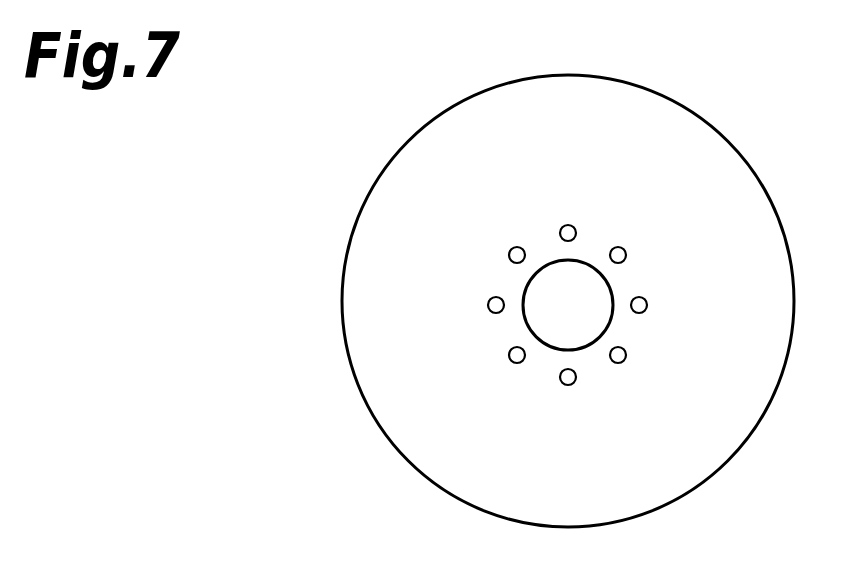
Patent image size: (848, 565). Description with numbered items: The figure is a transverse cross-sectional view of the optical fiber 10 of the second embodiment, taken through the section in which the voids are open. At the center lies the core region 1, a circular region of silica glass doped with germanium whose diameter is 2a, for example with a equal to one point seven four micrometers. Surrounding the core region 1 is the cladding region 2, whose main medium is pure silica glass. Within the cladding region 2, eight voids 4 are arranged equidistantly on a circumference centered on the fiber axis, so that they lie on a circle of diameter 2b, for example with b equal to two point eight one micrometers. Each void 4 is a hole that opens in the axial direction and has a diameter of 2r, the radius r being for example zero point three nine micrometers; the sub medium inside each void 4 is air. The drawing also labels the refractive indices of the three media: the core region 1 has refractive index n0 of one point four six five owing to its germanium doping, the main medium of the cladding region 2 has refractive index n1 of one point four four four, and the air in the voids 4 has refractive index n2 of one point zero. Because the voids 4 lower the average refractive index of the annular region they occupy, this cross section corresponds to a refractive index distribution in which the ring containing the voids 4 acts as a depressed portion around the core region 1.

The core region 1 is at (553, 270).
The cladding region 2 is at (491, 106).
The voids 4 is at (568, 224).
The optical fiber 10 is at (733, 110).
The refractive index of core region n0 is at (590, 263).
The refractive index of main medium region n1 is at (693, 452).
The refractive index of voids n2 is at (648, 299).
The void diameter 2r is at (505, 247).
The core region diameter 2a is at (618, 365).
The void circumference diameter 2b is at (639, 315).